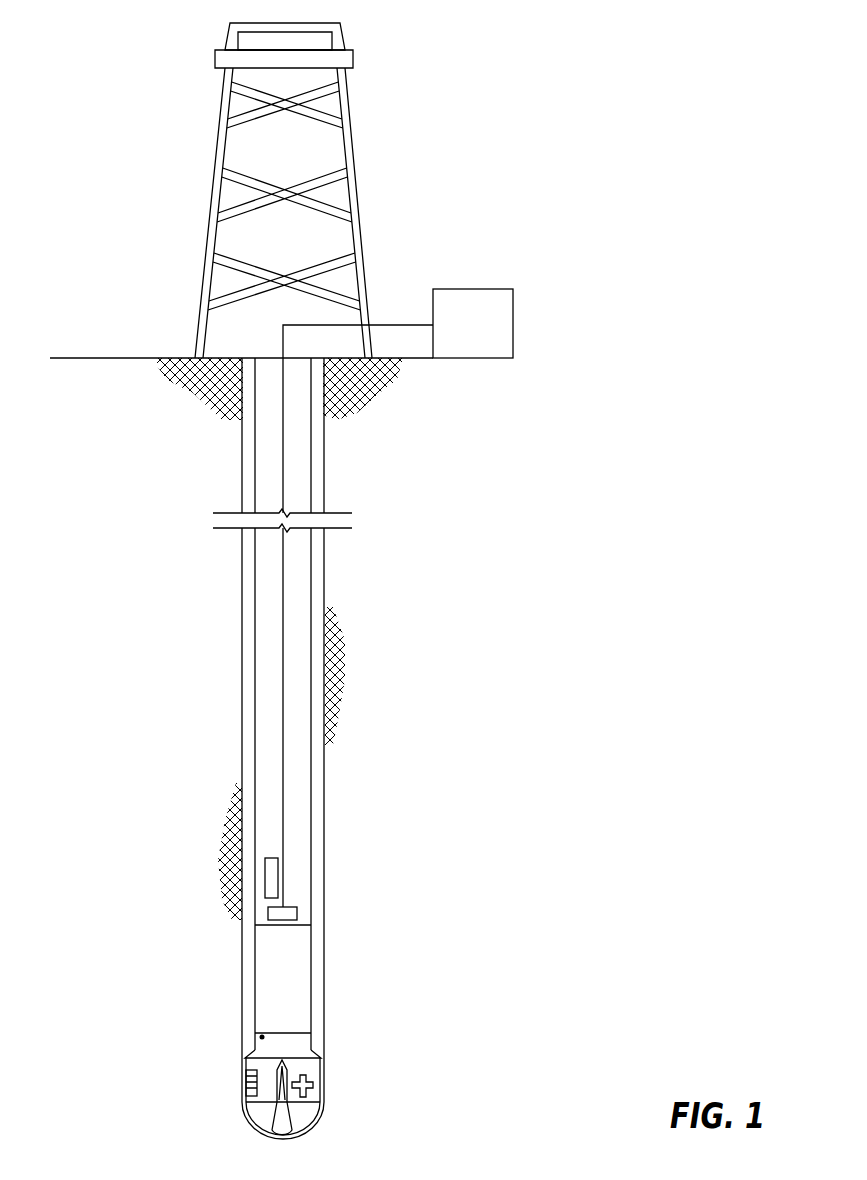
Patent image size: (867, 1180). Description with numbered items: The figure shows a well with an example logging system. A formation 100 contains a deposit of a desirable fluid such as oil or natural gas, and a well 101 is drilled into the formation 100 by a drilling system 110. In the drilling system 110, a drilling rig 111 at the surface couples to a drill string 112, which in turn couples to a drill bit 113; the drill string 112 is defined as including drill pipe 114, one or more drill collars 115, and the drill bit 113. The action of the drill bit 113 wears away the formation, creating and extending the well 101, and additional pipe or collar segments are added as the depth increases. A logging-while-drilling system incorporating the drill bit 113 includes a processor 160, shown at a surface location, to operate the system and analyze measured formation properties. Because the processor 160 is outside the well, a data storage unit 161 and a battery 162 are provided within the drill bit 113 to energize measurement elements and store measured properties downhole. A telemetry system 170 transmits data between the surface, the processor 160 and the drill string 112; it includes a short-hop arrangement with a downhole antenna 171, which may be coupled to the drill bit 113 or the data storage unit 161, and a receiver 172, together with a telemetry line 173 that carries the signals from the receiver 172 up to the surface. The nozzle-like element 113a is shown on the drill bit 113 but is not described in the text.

The formation 100 is at (531, 577).
The drilling system 110 is at (458, 178).
The drilling rig 111 is at (210, 212).
The processor 160 is at (492, 336).
The well 101 is at (326, 478).
The drill string 112 is at (216, 643).
The drill pipe 114 is at (254, 758).
The drill collar 115 is at (325, 993).
The telemetry line 173 is at (284, 777).
The receiver 172 is at (264, 873).
The telemetry system 170 is at (364, 882).
The antenna 171 is at (252, 1037).
The drill bit 113 is at (323, 1097).
The bit nozzle 113a is at (314, 1077).
The battery 162 is at (244, 1074).
The data storage unit 161 is at (244, 1085).